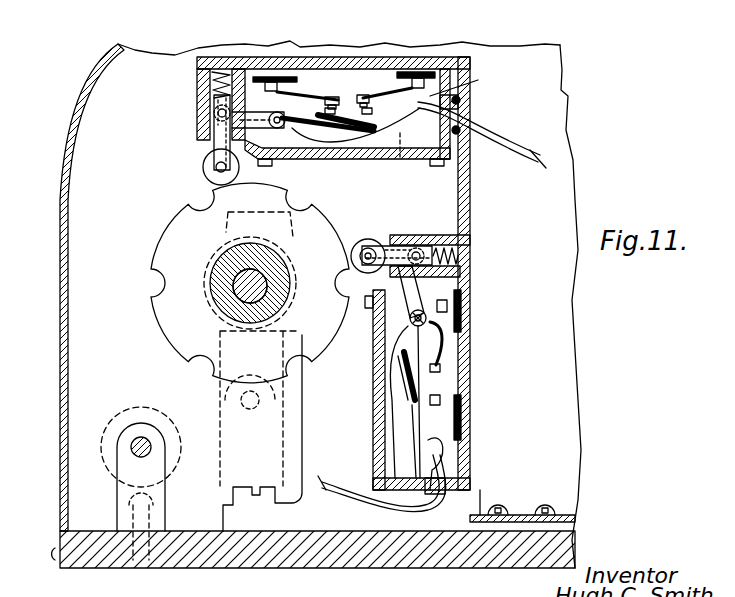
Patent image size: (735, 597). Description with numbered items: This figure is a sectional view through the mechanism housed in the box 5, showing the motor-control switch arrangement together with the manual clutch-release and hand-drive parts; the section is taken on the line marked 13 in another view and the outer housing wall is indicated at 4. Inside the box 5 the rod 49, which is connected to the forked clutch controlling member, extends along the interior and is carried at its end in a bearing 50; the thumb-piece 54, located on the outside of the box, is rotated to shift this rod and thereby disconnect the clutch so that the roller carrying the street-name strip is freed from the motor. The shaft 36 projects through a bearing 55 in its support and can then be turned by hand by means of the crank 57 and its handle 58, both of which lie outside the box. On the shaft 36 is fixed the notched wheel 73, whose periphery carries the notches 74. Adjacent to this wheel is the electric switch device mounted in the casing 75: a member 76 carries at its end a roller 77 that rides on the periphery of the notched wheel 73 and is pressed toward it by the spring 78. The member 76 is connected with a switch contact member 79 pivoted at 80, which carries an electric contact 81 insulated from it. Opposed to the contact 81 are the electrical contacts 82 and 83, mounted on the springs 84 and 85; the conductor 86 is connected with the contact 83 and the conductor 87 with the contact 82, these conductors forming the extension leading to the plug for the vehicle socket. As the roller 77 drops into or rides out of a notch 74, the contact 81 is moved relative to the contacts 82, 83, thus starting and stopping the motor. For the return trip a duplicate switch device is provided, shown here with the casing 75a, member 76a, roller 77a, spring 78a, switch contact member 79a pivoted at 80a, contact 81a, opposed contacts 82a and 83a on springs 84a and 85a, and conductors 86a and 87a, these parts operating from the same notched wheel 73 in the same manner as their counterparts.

The housing 4 is at (74, 72).
The box 5 is at (333, 556).
The section line 13 is at (346, 9).
The shaft 36 is at (262, 280).
The rod 49 is at (131, 447).
The bearing 50 is at (126, 460).
The thumb-piece 54 is at (113, 420).
The bearing 55 is at (235, 238).
The crank 57 is at (225, 348).
The handle 58 is at (240, 428).
The notched wheel 73 is at (172, 233).
The notches 74 is at (192, 200).
The casing 75 is at (415, 160).
The casing 75a is at (392, 492).
The member 76 is at (220, 135).
The member 76a is at (403, 250).
The roller 77 is at (206, 160).
The roller 77a is at (362, 242).
The spring 78 is at (210, 80).
The spring 78a is at (450, 246).
The switch contact member 79 is at (290, 130).
The switch contact member 79a is at (420, 290).
The pivot 80 is at (278, 125).
The pivot 80a is at (410, 318).
The electric contact 81 is at (343, 115).
The electric contact 81a is at (420, 385).
The electrical contact 82 is at (364, 95).
The electrical contact 82a is at (440, 399).
The electrical contact 83 is at (333, 96).
The electrical contact 83a is at (440, 366).
The spring 84 is at (402, 96).
The spring 84a is at (452, 412).
The spring 85 is at (312, 90).
The spring 85a is at (446, 340).
The conductor 86 is at (522, 165).
The conductor 86a is at (384, 457).
The conductor 87 is at (478, 80).
The conductor 87a is at (452, 576).